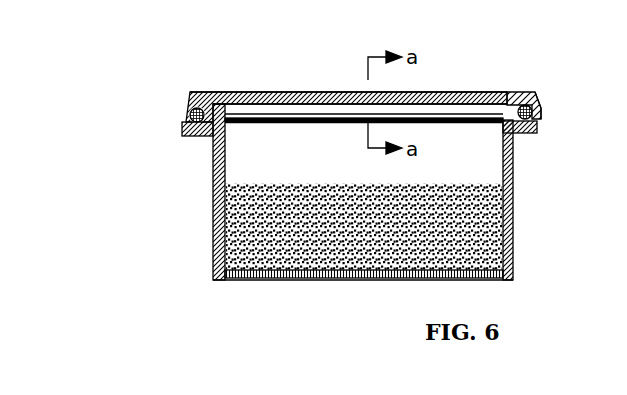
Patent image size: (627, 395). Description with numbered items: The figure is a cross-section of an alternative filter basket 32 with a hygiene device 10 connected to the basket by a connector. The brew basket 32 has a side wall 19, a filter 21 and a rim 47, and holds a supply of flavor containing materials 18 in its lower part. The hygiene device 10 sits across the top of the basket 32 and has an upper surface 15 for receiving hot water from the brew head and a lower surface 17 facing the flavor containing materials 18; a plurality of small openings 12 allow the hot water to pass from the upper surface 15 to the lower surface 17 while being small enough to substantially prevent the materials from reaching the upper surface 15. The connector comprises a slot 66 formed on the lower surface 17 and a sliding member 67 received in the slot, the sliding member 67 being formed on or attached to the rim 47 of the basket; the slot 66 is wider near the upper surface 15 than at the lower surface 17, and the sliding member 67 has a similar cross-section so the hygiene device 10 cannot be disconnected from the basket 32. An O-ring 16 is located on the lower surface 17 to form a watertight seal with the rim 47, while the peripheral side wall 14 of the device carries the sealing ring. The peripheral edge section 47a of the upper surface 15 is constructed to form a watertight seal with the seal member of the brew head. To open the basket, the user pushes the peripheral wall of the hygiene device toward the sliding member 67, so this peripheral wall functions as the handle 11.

The hygiene device 10 is at (326, 83).
The handle 11 is at (539, 95).
The small openings 12 is at (456, 91).
The peripheral side wall 14 is at (542, 102).
The upper surface 15 is at (287, 105).
The O-ring 16 is at (195, 92).
The lower surface 17 is at (287, 105).
The flavor containing materials 18 is at (235, 211).
The side wall 19 is at (218, 253).
The filter 21 is at (346, 281).
The brew basket 32 is at (210, 289).
The rim 47 is at (538, 125).
The peripheral edge section 47a is at (517, 92).
The slot 66 is at (330, 108).
The sliding member 67 is at (237, 123).